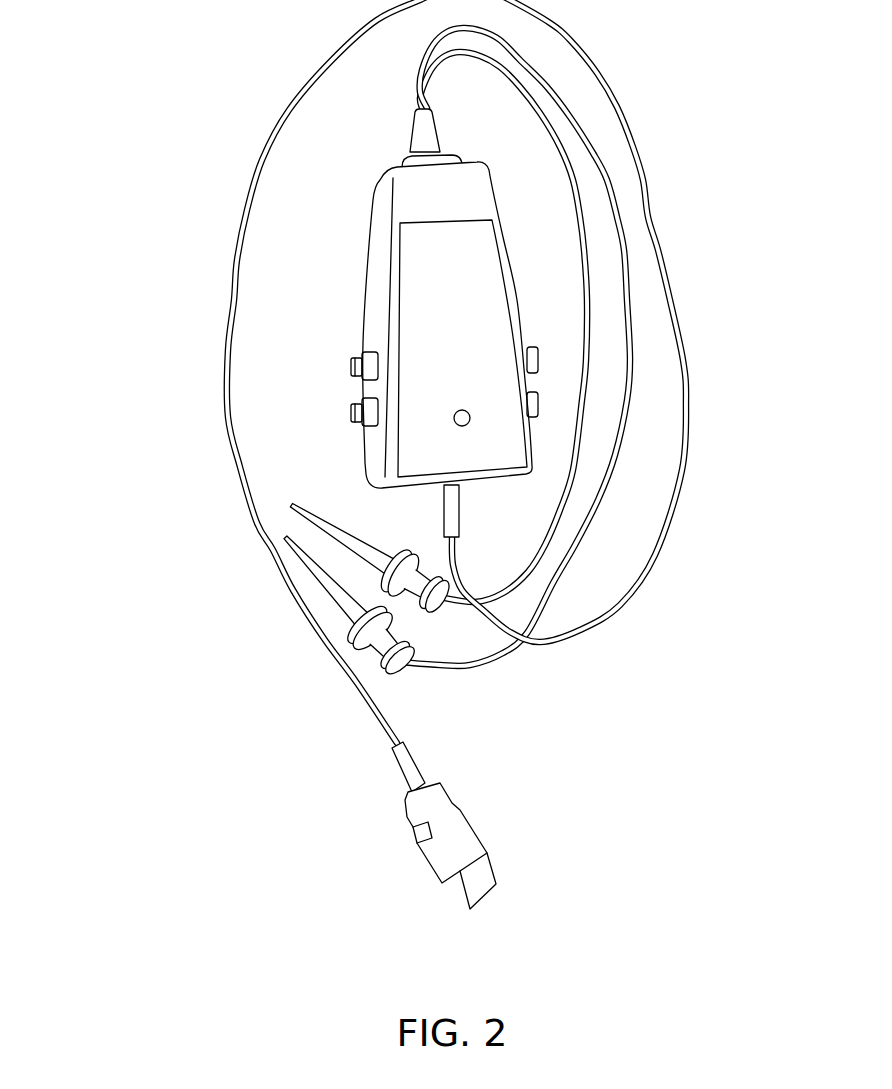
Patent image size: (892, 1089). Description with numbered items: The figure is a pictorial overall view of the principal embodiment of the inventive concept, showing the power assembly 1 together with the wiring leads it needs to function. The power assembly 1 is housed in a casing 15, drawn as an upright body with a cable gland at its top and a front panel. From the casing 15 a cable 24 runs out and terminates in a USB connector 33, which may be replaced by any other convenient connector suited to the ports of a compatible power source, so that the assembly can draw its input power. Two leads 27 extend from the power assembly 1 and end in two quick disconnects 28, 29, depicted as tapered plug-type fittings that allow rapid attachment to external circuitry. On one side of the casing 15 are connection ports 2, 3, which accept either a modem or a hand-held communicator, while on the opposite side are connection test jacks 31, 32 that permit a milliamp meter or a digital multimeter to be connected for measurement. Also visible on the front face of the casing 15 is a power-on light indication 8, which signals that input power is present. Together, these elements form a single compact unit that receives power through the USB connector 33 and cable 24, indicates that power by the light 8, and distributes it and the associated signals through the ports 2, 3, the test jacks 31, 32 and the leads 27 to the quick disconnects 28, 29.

The power assembly 1 is at (138, 83).
The connection port 2 is at (350, 360).
The connection port 3 is at (348, 410).
The power-on light indication 8 is at (465, 425).
The casing 15 is at (382, 173).
The cable 24 is at (232, 378).
The lead 27 is at (603, 180).
The quick disconnect 28 is at (317, 577).
The quick disconnect 29 is at (338, 527).
The connection test jack 31 is at (540, 360).
The connection test jack 32 is at (540, 402).
The USB connector 33 is at (480, 880).